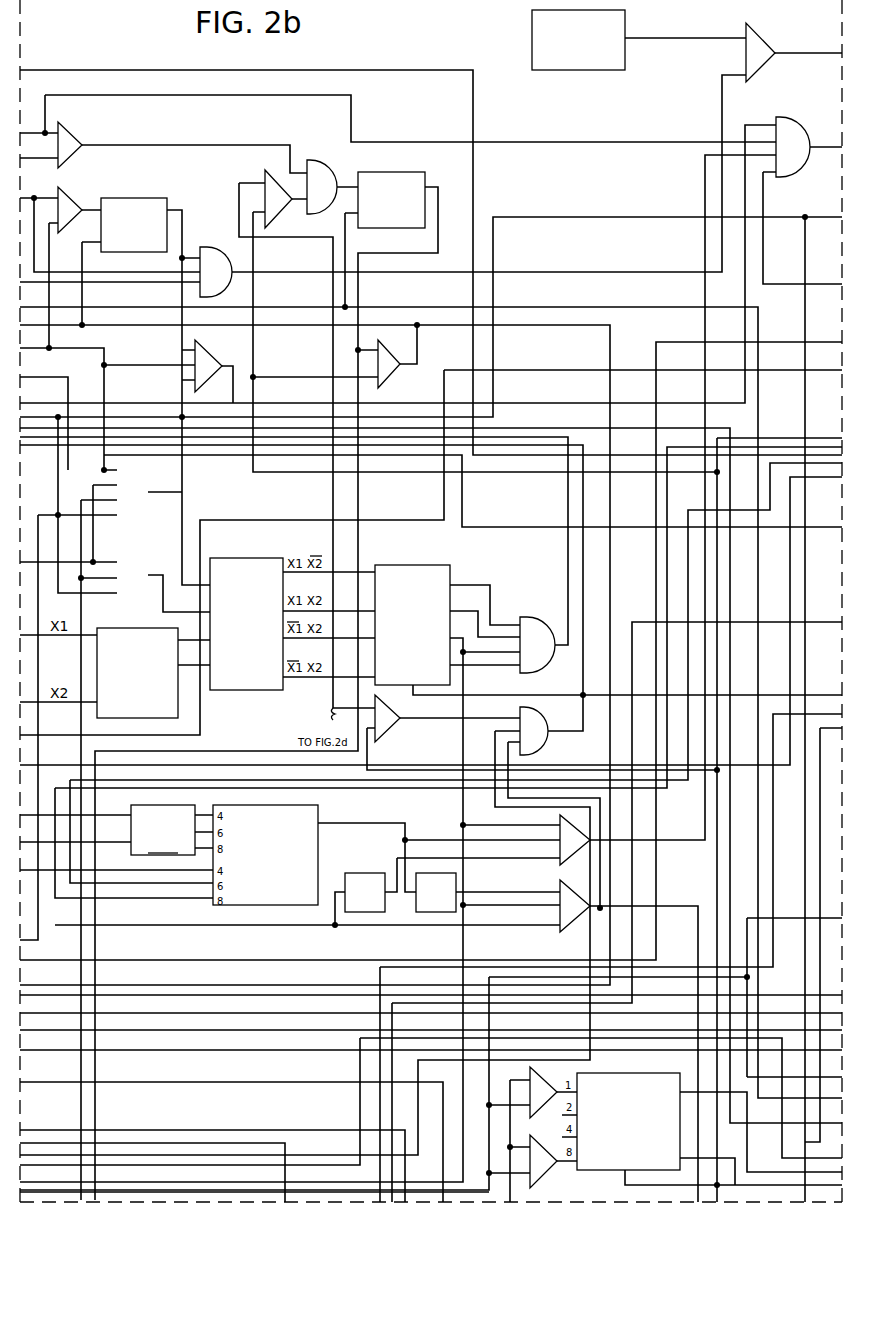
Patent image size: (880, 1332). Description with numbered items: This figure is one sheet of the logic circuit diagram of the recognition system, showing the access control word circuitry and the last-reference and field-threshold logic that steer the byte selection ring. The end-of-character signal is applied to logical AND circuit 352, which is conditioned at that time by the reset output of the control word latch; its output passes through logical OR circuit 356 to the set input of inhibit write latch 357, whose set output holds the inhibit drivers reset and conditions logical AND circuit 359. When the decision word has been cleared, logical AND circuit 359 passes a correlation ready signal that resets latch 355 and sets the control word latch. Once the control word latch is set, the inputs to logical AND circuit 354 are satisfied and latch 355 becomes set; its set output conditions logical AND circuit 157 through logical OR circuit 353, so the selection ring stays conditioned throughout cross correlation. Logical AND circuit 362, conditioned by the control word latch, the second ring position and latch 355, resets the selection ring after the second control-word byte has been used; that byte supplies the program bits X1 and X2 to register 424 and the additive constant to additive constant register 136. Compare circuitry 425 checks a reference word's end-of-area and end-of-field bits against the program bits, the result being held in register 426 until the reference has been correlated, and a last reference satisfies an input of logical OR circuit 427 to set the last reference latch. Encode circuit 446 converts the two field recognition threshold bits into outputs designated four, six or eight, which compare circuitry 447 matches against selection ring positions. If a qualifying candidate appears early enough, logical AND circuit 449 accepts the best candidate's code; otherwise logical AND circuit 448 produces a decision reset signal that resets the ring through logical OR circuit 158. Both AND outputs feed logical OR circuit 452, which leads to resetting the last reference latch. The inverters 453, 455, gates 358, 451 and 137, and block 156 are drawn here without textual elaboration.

The 500 KC clock 156 is at (591, 82).
The logical AND circuit 157 is at (760, 78).
The logical OR circuit 158 is at (791, 117).
The logical AND circuit 352 is at (72, 130).
The logical OR circuit 353 is at (222, 246).
The logical AND circuit 354 is at (72, 192).
The latch 355 is at (138, 198).
The logical OR circuit 356 is at (322, 160).
The inhibit write latch 357 is at (416, 172).
The AND gate 358 is at (263, 170).
The logical AND circuit 359 is at (388, 386).
The logical AND circuit 362 is at (205, 347).
The register 424 is at (159, 628).
The compare circuitry 425 is at (262, 690).
The register 426 is at (416, 566).
The logical OR circuit 427 is at (532, 616).
The encode circuit 446 is at (163, 830).
The compare circuitry 447 is at (318, 808).
The logical AND circuit 448 is at (575, 858).
The logical AND circuit 449 is at (559, 928).
The AND gate 451 is at (390, 735).
The logical OR circuit 452 is at (546, 742).
The inverter 453 is at (458, 882).
The inverter 455 is at (366, 872).
The additive constant register 136 is at (608, 1068).
The AND gates 137 is at (529, 1076).